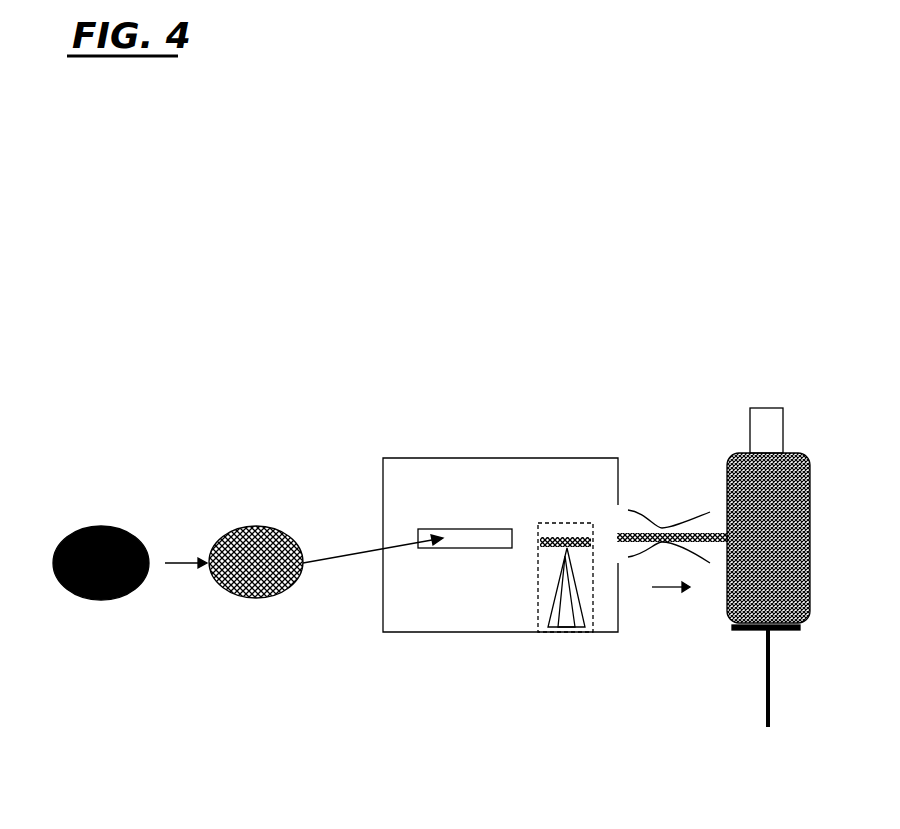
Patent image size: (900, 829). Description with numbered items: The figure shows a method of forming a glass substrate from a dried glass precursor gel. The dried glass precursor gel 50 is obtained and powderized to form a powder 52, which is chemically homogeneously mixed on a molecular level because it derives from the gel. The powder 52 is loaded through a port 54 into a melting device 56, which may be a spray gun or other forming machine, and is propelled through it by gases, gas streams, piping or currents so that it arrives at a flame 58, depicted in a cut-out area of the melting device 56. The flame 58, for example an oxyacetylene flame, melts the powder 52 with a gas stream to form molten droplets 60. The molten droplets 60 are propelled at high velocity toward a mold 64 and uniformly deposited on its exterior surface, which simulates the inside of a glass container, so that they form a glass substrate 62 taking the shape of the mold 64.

The dried glass precursor gel 50 is at (110, 525).
The powder 52 is at (257, 540).
The port 54 is at (465, 527).
The melting device 56 is at (550, 455).
The flame 58 is at (583, 630).
The molten droplets 60 is at (660, 537).
The glass substrate 62 is at (803, 458).
The mold 64 is at (808, 583).